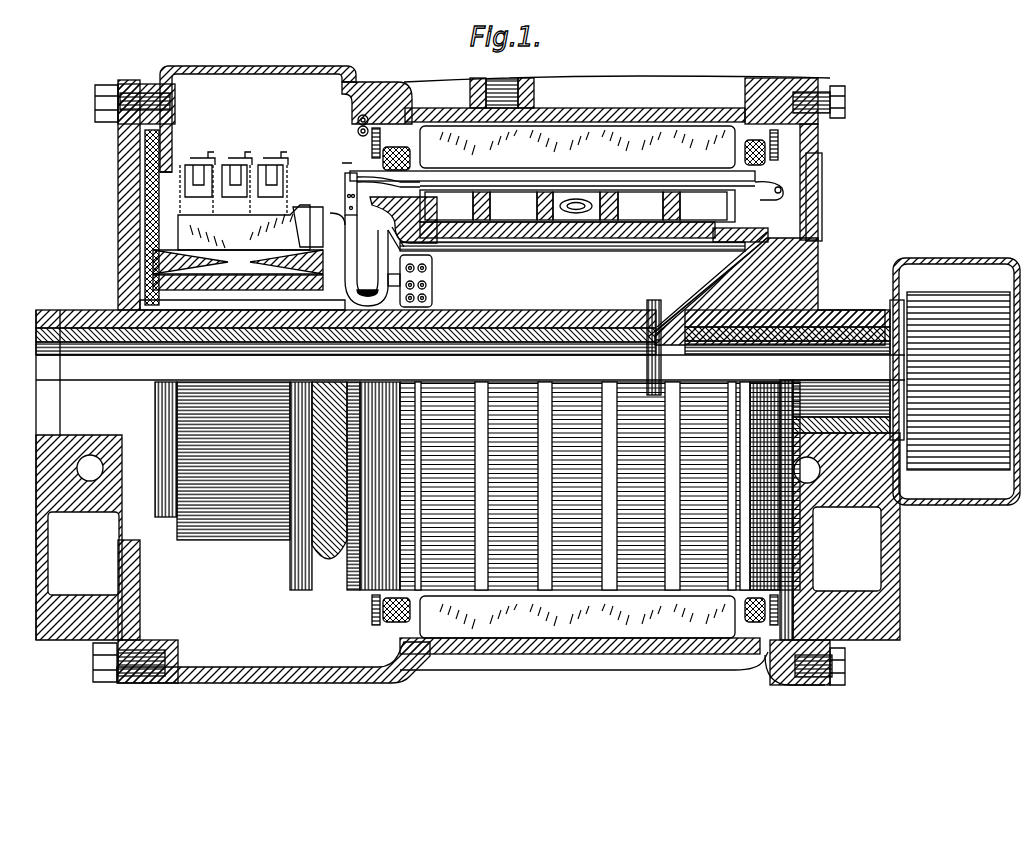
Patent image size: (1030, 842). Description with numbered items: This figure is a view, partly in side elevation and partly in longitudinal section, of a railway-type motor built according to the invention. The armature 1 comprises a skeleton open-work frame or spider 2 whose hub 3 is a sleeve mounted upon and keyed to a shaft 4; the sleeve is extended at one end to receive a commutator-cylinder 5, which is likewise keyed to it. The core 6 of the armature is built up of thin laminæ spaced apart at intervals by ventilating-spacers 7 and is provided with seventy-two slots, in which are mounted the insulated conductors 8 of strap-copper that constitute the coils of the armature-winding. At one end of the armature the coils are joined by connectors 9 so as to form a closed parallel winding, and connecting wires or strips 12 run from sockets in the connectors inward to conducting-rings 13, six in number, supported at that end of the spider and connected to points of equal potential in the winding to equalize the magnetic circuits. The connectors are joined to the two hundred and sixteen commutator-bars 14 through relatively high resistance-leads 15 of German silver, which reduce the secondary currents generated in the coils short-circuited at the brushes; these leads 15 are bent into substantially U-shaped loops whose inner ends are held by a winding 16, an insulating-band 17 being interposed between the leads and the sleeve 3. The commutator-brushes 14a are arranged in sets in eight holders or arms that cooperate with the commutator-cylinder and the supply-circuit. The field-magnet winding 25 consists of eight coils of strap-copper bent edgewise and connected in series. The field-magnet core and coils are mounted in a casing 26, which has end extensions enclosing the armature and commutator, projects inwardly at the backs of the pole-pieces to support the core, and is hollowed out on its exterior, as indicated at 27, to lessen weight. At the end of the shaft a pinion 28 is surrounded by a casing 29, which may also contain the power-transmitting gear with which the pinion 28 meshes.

The armature 1 is at (770, 211).
The skeleton open-work frame or spider 2 is at (552, 221).
The hub 3 is at (522, 318).
The shaft 4 is at (528, 350).
The commutator-cylinder 5 is at (236, 545).
The core 6 is at (590, 215).
The ventilating-spacers 7 is at (478, 210).
The insulated conductors 8 is at (777, 190).
The connectors 9 is at (345, 184).
The connecting wires or strips 12 is at (428, 278).
The conducting-rings 13 is at (428, 296).
The commutator-bars 14 is at (238, 247).
The commutator-brushes 14a is at (234, 185).
The resistance-leads 15 is at (322, 560).
The winding 16 is at (356, 296).
The insulating-band 17 is at (403, 252).
The field-magnet winding 25 is at (370, 640).
The casing 26 is at (408, 96).
The hollowed-out exterior portions 27 is at (628, 120).
The pinion 28 is at (958, 288).
The casing 29 is at (968, 260).